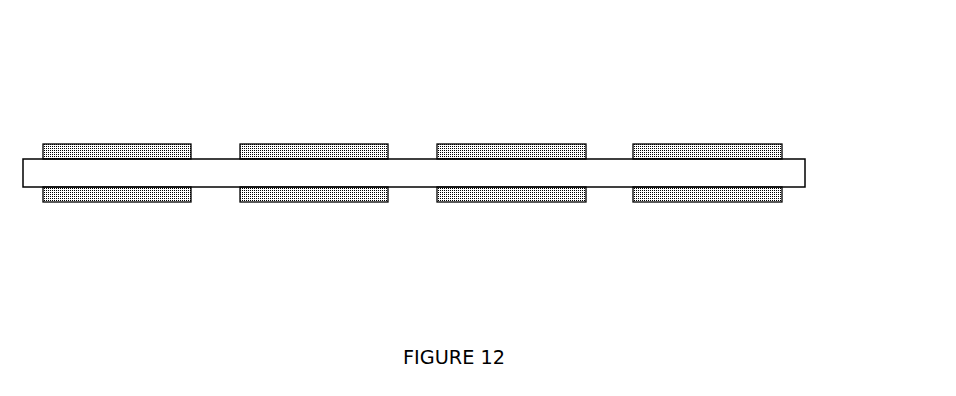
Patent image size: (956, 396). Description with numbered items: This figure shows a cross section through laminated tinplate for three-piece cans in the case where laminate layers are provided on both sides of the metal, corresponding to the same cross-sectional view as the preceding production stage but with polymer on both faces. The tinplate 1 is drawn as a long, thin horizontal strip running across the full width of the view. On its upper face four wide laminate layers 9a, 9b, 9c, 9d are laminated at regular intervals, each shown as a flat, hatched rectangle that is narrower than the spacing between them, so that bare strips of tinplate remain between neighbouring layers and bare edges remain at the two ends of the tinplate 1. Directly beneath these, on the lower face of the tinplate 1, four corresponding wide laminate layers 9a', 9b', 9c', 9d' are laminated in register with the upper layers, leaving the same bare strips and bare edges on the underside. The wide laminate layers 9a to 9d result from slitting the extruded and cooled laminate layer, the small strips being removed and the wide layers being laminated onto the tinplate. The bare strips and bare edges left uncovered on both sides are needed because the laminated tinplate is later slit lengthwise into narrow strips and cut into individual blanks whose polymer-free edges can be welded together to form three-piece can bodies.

The tinplate 1 is at (437, 172).
The wide laminate layer 9a is at (117, 84).
The wide laminate layer 9b is at (314, 84).
The wide laminate layer 9c is at (511, 84).
The wide laminate layer 9d is at (707, 84).
The wide laminate layer 9a' is at (117, 242).
The wide laminate layer 9b' is at (314, 242).
The wide laminate layer 9c' is at (511, 242).
The wide laminate layer 9d' is at (707, 242).